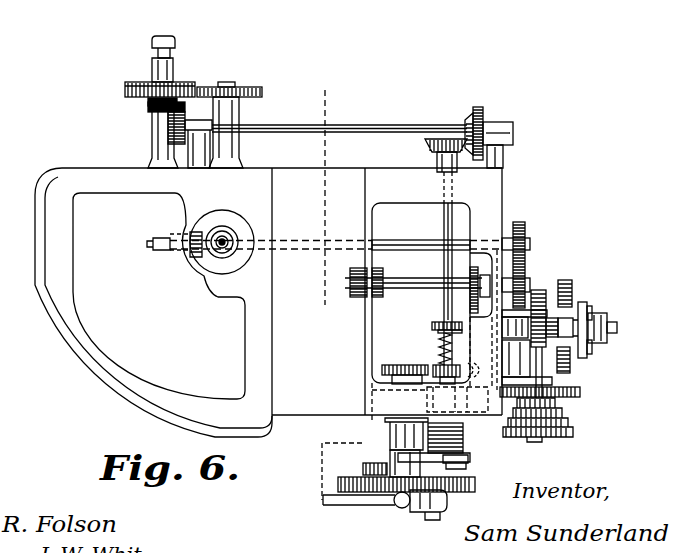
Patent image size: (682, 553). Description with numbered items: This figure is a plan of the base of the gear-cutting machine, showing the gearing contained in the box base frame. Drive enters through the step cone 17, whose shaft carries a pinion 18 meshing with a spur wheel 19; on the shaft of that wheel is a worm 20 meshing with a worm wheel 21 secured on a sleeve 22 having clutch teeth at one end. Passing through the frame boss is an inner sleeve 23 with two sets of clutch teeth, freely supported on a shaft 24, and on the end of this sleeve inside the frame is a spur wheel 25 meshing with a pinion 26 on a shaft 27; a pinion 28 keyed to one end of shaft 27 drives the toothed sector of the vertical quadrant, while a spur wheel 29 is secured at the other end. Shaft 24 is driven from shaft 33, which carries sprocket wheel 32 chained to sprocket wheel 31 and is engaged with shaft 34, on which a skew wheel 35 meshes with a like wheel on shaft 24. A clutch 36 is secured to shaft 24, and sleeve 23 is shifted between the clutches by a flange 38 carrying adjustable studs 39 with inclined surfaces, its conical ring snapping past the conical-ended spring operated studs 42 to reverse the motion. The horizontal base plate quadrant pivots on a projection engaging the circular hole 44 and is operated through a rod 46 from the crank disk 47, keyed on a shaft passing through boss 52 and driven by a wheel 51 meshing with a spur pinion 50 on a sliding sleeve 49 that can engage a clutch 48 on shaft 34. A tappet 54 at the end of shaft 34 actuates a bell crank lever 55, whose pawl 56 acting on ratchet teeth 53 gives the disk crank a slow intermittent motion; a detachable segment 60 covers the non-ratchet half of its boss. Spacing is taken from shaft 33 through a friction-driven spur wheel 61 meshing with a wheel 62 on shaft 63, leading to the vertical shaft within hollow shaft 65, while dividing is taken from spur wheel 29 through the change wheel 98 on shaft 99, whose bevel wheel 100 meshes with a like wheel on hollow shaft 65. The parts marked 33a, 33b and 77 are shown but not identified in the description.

The cone 17 is at (577, 428).
The pinion 18 is at (556, 440).
The spur wheel 19 is at (580, 393).
The worm 20 is at (541, 385).
The worm wheel 21 is at (537, 295).
The sleeve 22 is at (517, 343).
The inner sleeve 23 is at (573, 302).
The shaft 24 is at (616, 330).
The spur wheel 25 is at (475, 379).
The pinion 26 is at (467, 297).
The shaft 27 is at (434, 276).
The pinion 28 is at (355, 298).
The spur wheel 29 is at (524, 262).
The sprocket wheel 31 is at (567, 317).
The sprocket wheel 32 is at (483, 116).
The shaft 33 is at (326, 137).
The gear 33a is at (472, 125).
The bevel gear 33b is at (428, 141).
The shaft 34 is at (443, 224).
The skew wheel 35 is at (432, 325).
The clutch 36 is at (608, 324).
The flange 38 is at (587, 303).
The adjustable stud 39 is at (591, 318).
The spring operated studs 42 is at (571, 362).
The circular hole 44 is at (228, 209).
The rod 46 is at (372, 505).
The crank disk 47 is at (345, 480).
The clutch 48 is at (463, 443).
The sliding sleeve 49 is at (430, 403).
The spur pinion 50 is at (440, 366).
The spur wheel 51 is at (400, 366).
The boss 52 is at (390, 426).
The ratchet teeth 53 is at (365, 470).
The tappet 54 is at (438, 341).
The bell crank lever 55 is at (463, 468).
The pawl 56 is at (395, 455).
The detachable segment 60 is at (448, 500).
The spur wheel 61 is at (126, 91).
The wheel 62 is at (262, 92).
The shaft 63 is at (227, 83).
The hollow shaft 65 is at (232, 234).
The support 77 is at (503, 428).
The change wheel 98 is at (525, 228).
The shaft 99 is at (336, 235).
The bevel wheel 100 is at (200, 258).